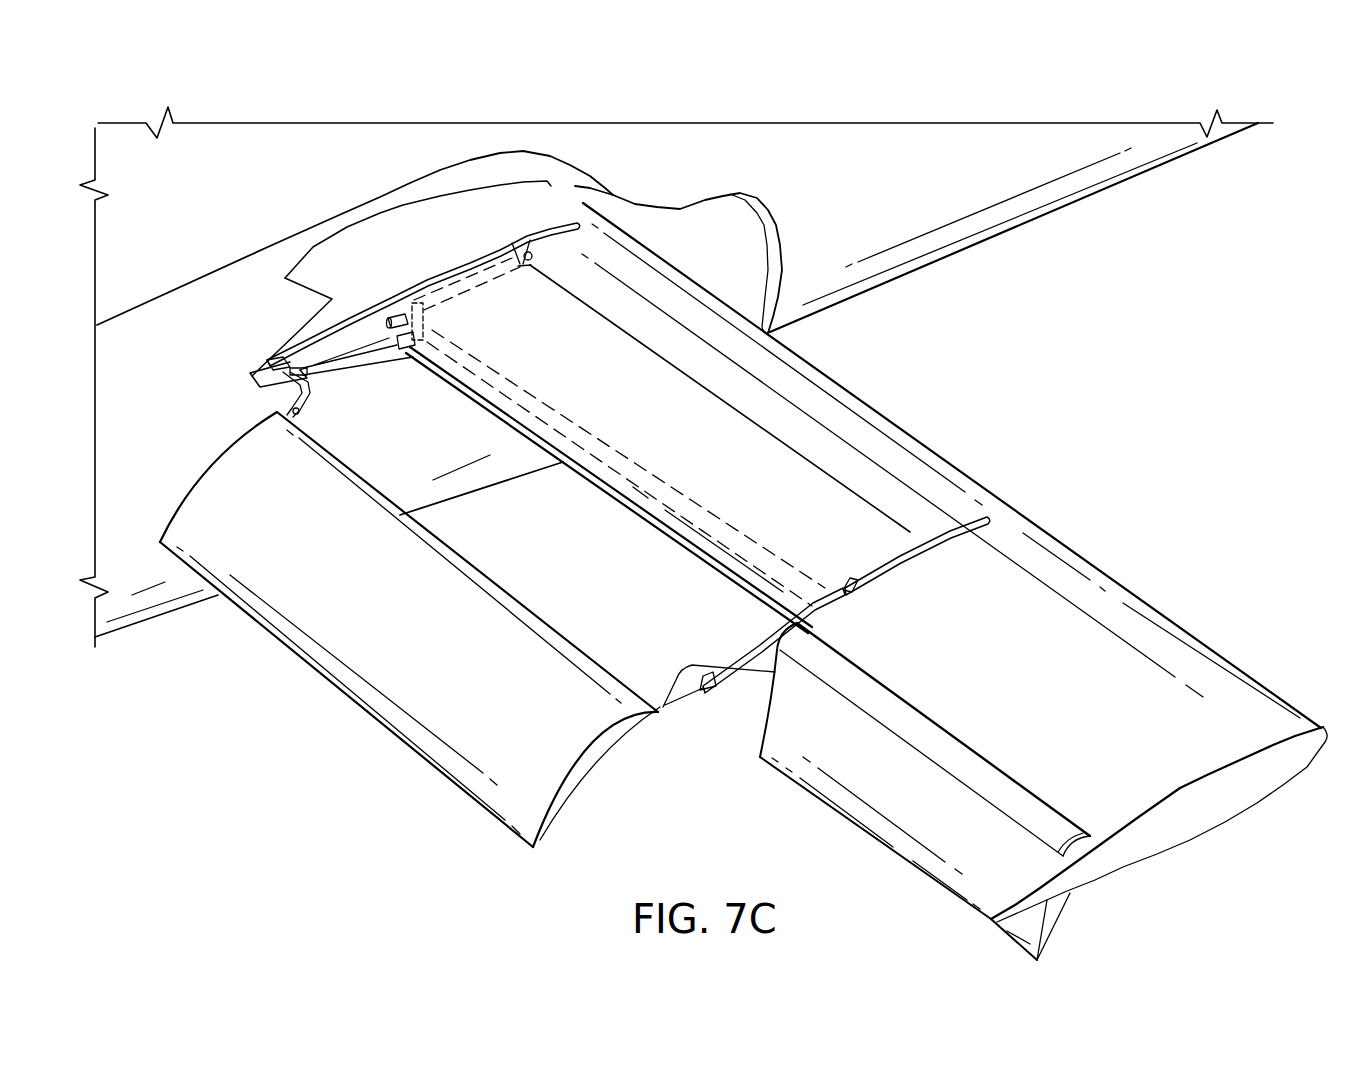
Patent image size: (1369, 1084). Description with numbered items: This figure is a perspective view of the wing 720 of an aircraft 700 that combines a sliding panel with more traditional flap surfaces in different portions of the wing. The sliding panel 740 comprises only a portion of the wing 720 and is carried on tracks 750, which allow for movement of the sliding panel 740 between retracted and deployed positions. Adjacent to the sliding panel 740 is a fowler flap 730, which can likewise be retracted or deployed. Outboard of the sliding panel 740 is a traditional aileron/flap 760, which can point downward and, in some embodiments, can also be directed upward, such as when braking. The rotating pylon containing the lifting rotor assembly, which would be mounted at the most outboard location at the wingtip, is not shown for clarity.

The aircraft embodiment 700 is at (310, 99).
The wing 720 is at (1110, 600).
The fowler flap 730 is at (490, 607).
The sliding panel 740 is at (663, 500).
The tracks 750 is at (350, 330).
The aileron/flap 760 is at (912, 847).